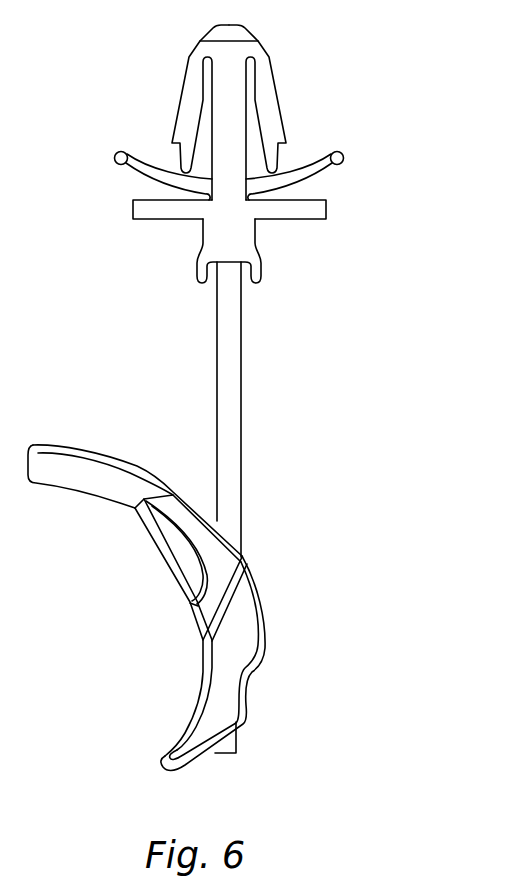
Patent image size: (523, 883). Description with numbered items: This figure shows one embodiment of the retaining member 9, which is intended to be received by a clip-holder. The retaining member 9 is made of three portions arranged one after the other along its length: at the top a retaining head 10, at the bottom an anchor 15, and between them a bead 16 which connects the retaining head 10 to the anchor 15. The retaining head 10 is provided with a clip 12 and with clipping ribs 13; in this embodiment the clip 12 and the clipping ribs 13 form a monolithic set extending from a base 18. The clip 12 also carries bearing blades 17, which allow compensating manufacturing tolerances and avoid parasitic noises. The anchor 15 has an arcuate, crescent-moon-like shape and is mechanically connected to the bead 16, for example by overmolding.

The retaining member 9 is at (278, 348).
The retaining head 10 is at (370, 22).
The clip 12 is at (270, 90).
The clipping ribs 13 is at (205, 265).
The anchor 15 is at (238, 630).
The bead 16 is at (230, 388).
The bearing blades 17 is at (122, 164).
The base 18 is at (148, 210).